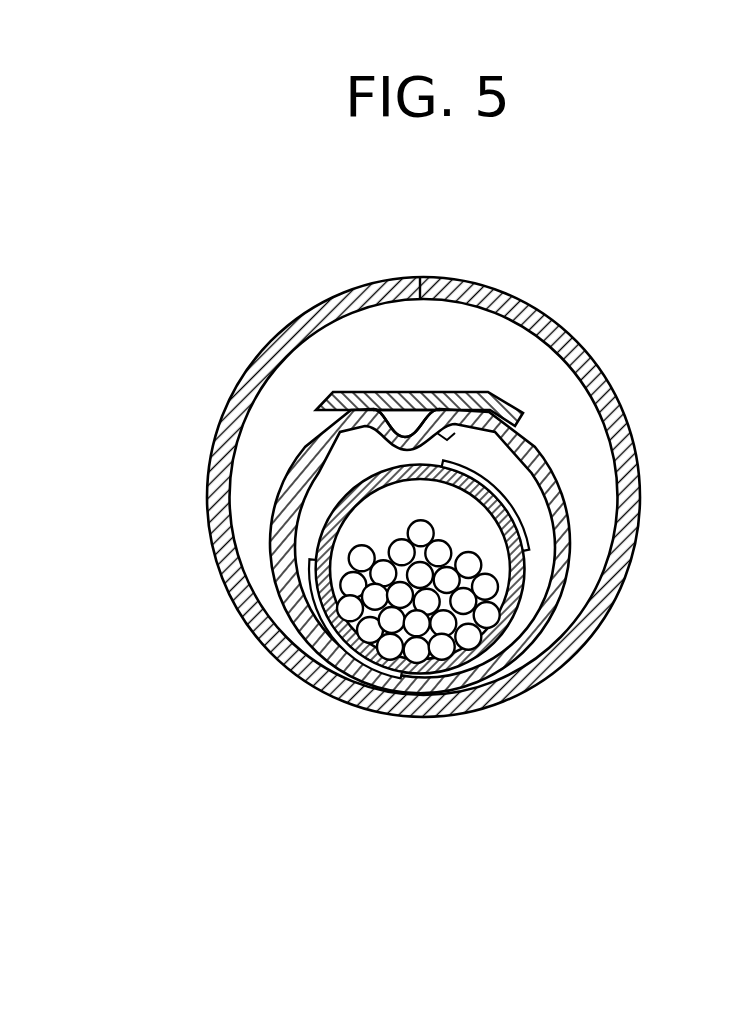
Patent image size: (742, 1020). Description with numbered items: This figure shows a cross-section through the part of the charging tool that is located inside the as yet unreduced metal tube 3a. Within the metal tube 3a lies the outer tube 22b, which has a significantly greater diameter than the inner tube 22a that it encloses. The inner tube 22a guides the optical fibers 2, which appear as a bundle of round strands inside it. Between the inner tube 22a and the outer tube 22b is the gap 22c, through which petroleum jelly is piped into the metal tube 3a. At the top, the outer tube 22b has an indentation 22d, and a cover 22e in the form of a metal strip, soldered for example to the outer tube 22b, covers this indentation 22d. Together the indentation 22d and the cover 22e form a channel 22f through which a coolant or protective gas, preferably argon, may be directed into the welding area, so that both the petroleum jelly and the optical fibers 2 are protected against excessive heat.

The optical fibers 2 is at (465, 603).
The metal tube 3a is at (585, 355).
The inner tube 22a is at (520, 544).
The outer tube 22b is at (283, 516).
The gap 22c is at (307, 549).
The indentation 22d is at (445, 433).
The cover 22e is at (455, 390).
The channel 22f is at (418, 418).